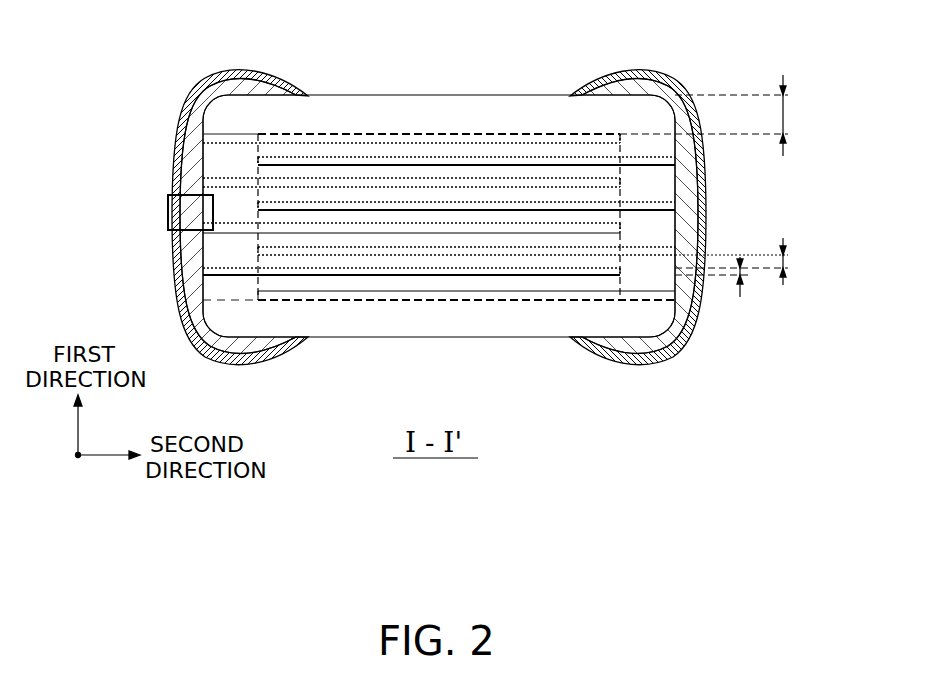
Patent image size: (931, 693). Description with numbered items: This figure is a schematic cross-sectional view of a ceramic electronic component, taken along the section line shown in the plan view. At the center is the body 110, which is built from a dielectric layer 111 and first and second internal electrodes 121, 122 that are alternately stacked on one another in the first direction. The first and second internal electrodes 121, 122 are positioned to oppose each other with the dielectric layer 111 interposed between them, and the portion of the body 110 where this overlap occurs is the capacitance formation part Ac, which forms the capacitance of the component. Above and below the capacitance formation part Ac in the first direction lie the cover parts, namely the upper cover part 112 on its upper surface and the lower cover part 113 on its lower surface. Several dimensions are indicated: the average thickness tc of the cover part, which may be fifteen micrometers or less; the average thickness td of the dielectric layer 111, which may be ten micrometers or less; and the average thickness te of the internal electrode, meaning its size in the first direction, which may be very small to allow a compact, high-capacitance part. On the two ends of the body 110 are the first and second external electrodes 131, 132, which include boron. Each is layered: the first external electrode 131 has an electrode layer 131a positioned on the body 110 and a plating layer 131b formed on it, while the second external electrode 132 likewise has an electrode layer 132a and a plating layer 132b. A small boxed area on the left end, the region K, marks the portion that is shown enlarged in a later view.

The body 110 is at (372, 94).
The dielectric layer 111 is at (310, 168).
The upper cover part 112 is at (435, 104).
The lower cover part 113 is at (452, 320).
The first internal electrode 121 is at (483, 141).
The second internal electrode 122 is at (550, 158).
The first external electrode 131 is at (175, 217).
The electrode layer 131a is at (186, 162).
The plating layer 131b is at (173, 190).
The second external electrode 132 is at (710, 217).
The electrode layer 132a is at (690, 184).
The plating layer 132b is at (705, 218).
The region K is at (168, 213).
The capacitance formation part Ac is at (538, 301).
The average thickness of the cover part tc is at (715, 115).
The average thickness of the dielectric layer td is at (744, 261).
The average thickness of the internal electrode te is at (720, 277).